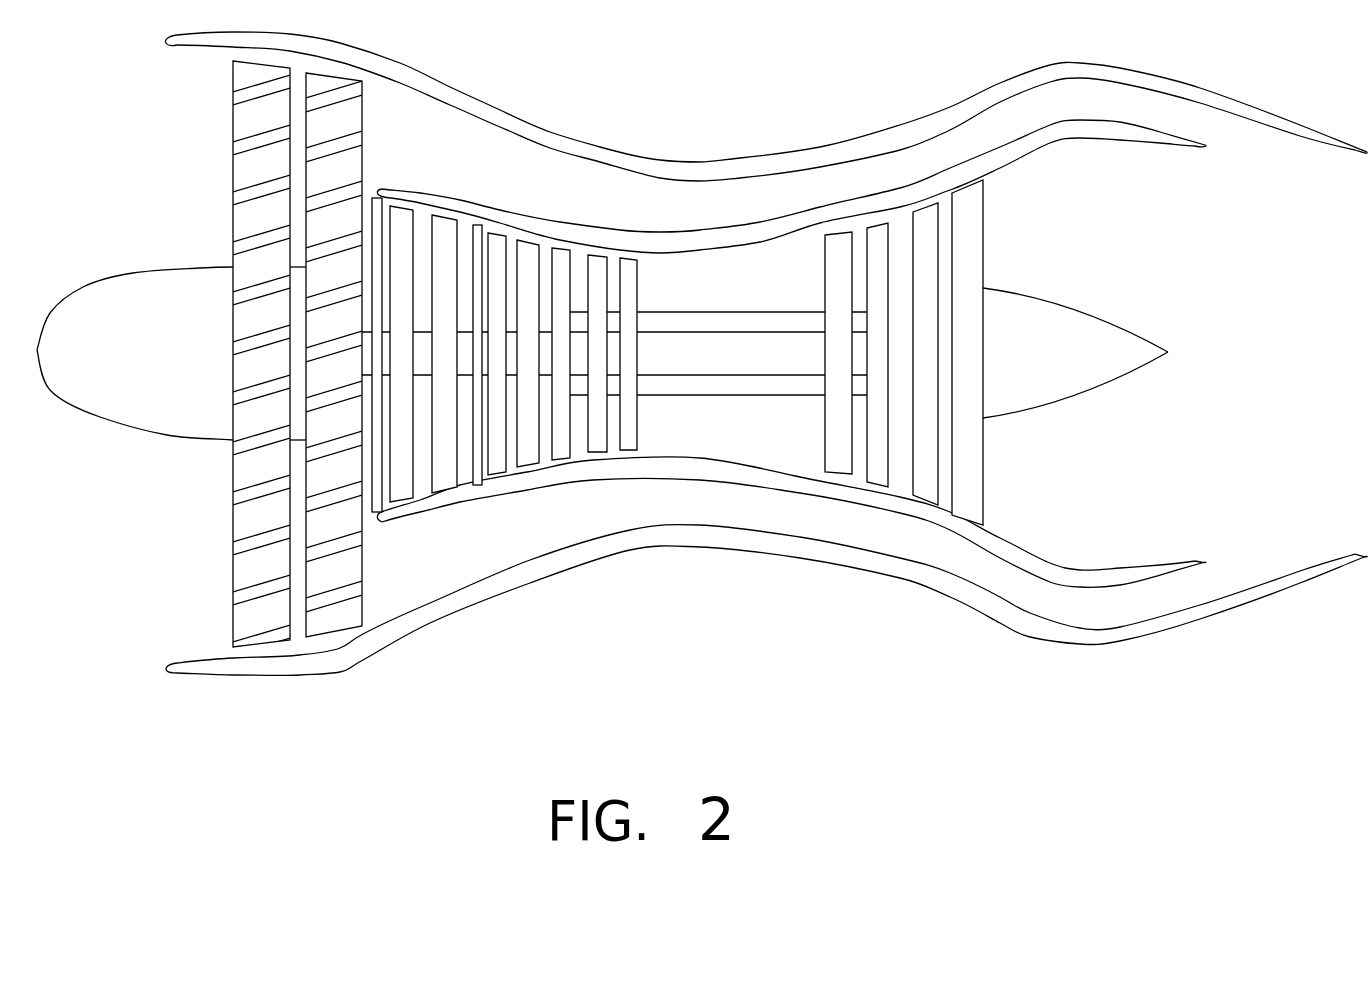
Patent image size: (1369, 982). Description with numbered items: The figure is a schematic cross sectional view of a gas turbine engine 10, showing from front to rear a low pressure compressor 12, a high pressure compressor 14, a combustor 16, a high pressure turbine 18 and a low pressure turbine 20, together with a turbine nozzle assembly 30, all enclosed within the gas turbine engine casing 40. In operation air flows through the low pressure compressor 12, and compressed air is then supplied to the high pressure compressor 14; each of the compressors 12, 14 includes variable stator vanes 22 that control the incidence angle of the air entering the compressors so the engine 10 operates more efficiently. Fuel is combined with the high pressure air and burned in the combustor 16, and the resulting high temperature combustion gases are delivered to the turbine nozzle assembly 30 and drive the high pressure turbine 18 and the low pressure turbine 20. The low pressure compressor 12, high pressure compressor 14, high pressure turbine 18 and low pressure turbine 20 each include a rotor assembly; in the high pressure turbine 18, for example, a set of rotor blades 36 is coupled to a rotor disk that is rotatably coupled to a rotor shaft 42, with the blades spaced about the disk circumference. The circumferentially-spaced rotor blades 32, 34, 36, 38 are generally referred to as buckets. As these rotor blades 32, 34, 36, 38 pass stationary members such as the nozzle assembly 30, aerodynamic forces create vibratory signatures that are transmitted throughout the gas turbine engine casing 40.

The gas turbine engine 10 is at (753, 701).
The low pressure compressor 12 is at (421, 223).
The high pressure compressor 14 is at (545, 257).
The combustor 16 is at (752, 263).
The high pressure turbine 18 is at (860, 242).
The low pressure turbine 20 is at (945, 202).
The variable stator vanes 22 is at (373, 196).
The turbine nozzle assembly 30 is at (1246, 327).
The rotor blades 32 is at (447, 490).
The rotor blades 34 is at (532, 468).
The rotor blades 36 is at (880, 470).
The rotor blades 38 is at (972, 525).
The gas turbine engine casing 40 is at (695, 233).
The rotor shaft 42 is at (862, 397).